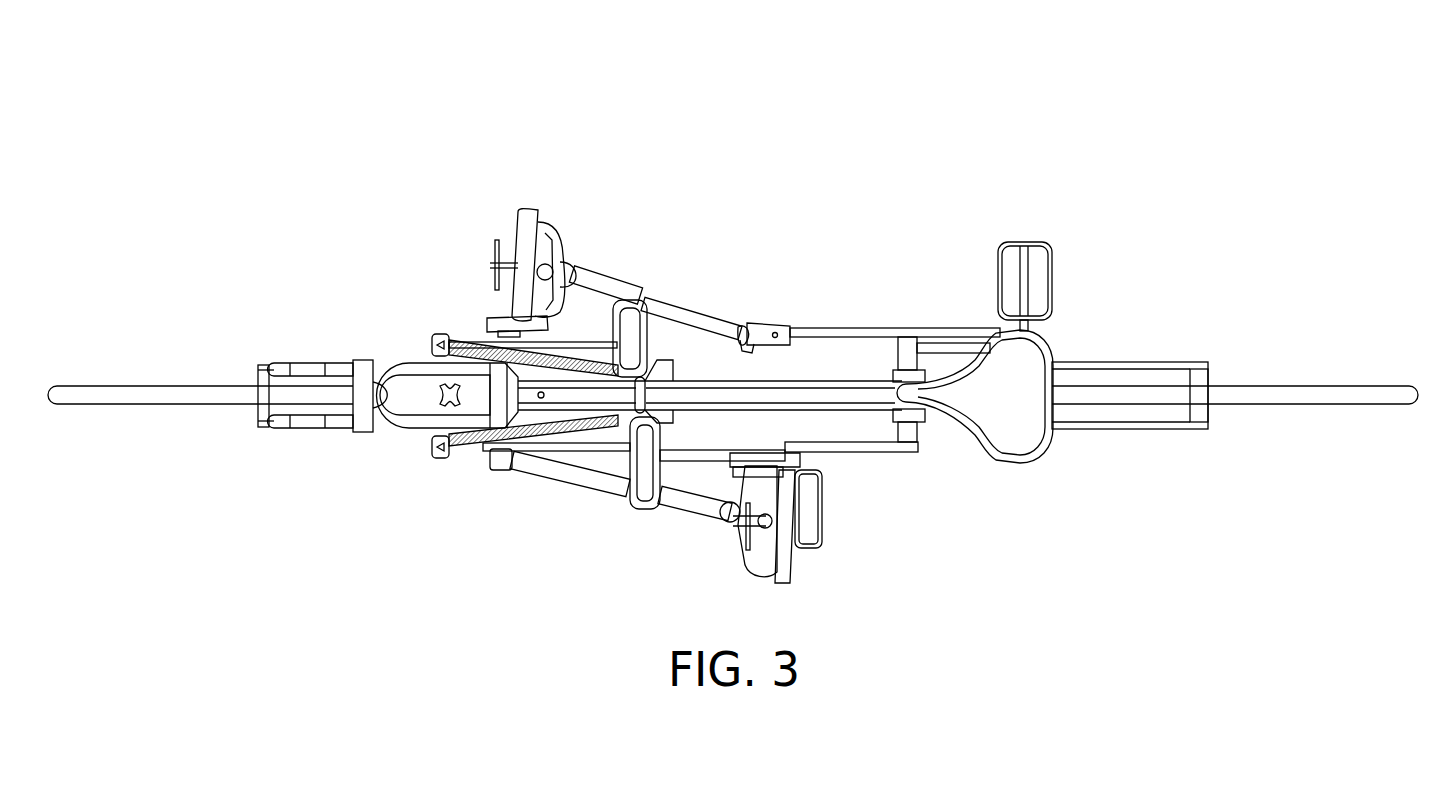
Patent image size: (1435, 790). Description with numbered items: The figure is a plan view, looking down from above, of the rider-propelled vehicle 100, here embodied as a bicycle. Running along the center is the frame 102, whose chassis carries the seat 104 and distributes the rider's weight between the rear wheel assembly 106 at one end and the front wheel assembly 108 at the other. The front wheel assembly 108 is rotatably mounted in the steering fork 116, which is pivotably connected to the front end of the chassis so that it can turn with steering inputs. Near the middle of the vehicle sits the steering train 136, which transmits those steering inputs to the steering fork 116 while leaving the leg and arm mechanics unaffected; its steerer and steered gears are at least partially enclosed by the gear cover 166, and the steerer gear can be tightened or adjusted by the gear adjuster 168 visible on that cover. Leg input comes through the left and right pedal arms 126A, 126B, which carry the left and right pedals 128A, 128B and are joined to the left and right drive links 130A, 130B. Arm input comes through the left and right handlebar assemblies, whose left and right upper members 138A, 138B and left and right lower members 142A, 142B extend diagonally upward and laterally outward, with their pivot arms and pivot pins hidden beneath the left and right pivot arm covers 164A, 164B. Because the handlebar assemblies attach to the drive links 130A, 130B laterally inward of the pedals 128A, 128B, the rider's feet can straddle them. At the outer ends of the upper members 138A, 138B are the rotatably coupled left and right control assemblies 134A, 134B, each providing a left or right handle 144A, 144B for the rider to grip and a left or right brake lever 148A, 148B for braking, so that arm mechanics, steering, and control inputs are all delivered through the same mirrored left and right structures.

The rider-propelled vehicle 100 is at (1170, 101).
The frame 102 is at (1083, 355).
The seat 104 is at (1043, 472).
The rear wheel assembly 106 is at (1316, 375).
The front wheel assembly 108 is at (140, 362).
The steering fork 116 is at (308, 444).
The left pedal arm 126A is at (862, 452).
The right pedal arm 126B is at (948, 345).
The left pedal 128A is at (812, 549).
The right pedal 128B is at (1040, 244).
The left drive link 130A is at (683, 456).
The right drive link 130B is at (906, 332).
The left control assembly 134A is at (686, 526).
The right control assembly 134B is at (595, 260).
The steering train 136 is at (602, 381).
The left upper member 138A is at (698, 512).
The right upper member 138B is at (592, 283).
The left lower member 142A is at (548, 472).
The right lower member 142B is at (700, 315).
The left handle 144A is at (788, 582).
The right handle 144B is at (525, 240).
The left brake lever 148A is at (748, 527).
The right brake lever 148B is at (497, 263).
The left pivot arm cover 164A is at (632, 472).
The right pivot arm cover 164B is at (652, 308).
The gear cover 166 is at (436, 381).
The gear adjuster 168 is at (440, 403).